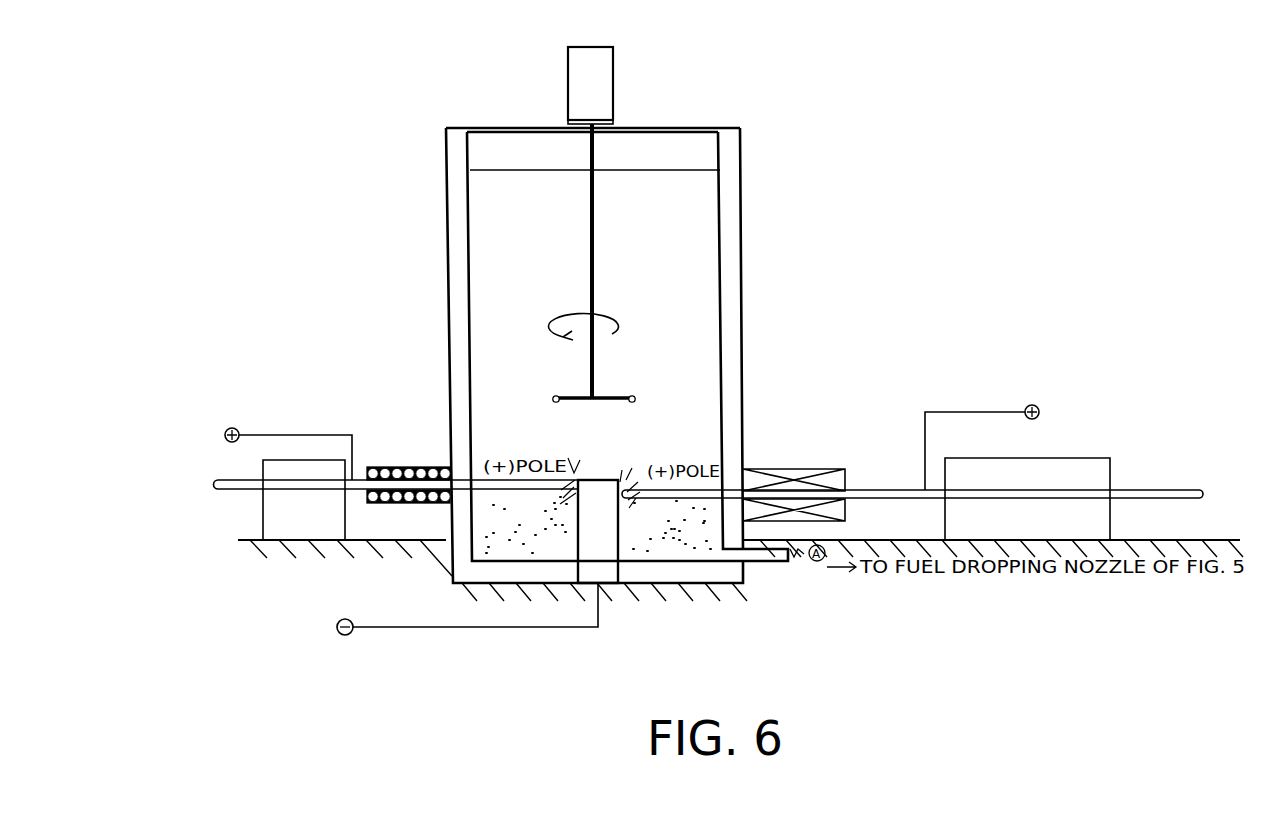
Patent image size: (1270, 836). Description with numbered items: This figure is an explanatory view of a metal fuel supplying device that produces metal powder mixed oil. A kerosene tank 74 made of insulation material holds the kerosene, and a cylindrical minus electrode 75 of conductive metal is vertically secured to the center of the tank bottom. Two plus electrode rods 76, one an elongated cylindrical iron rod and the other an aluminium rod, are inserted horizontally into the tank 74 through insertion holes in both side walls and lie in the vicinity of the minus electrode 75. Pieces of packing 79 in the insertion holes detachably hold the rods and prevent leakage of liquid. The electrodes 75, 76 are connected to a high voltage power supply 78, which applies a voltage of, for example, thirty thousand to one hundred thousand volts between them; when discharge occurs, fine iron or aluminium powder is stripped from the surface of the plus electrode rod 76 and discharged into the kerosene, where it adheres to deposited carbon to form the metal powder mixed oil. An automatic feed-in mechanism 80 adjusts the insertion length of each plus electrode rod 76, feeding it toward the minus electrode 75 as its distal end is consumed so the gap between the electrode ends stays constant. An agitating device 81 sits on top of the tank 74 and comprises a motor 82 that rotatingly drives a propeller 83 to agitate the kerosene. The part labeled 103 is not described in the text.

The kerosene tank 74 is at (741, 258).
The minus electrode 75 is at (603, 480).
The plus electrode rod 76 is at (360, 480).
The high voltage power supply 78 is at (232, 428).
The packing 79 is at (412, 467).
The automatic feed-in mechanism 80 is at (305, 460).
The agitating device 81 is at (649, 223).
The motor 82 is at (613, 58).
The propeller 83 is at (634, 395).
The tank lid 103 is at (741, 171).